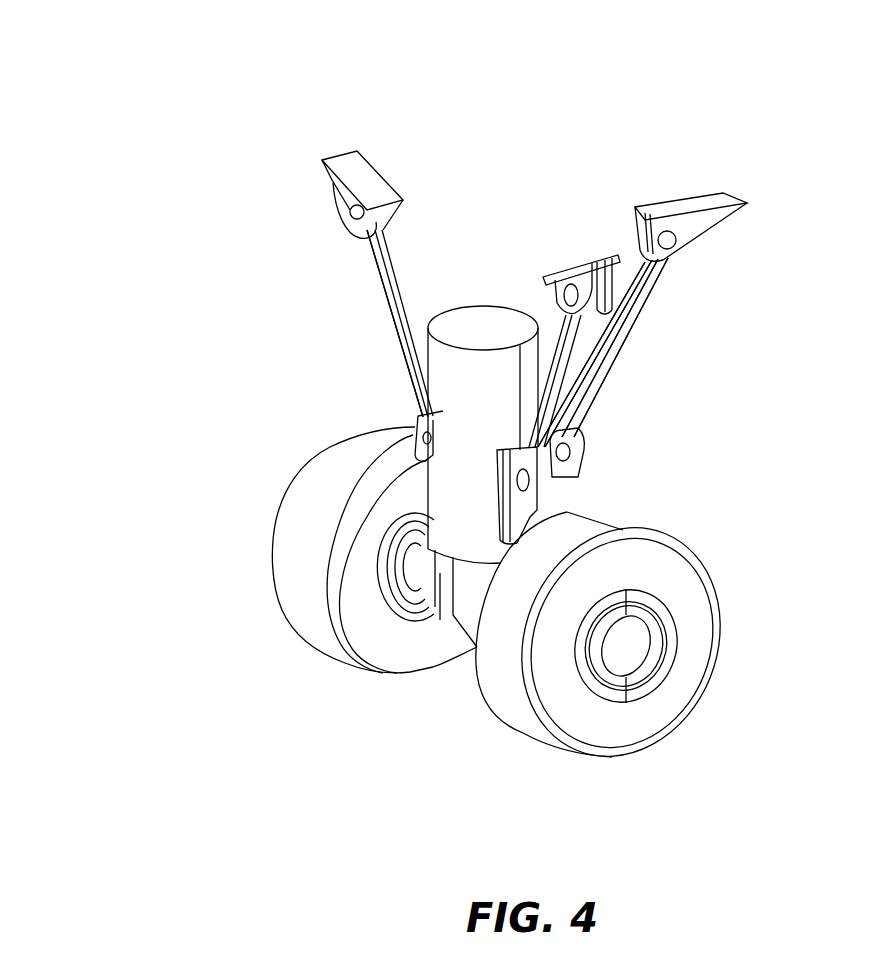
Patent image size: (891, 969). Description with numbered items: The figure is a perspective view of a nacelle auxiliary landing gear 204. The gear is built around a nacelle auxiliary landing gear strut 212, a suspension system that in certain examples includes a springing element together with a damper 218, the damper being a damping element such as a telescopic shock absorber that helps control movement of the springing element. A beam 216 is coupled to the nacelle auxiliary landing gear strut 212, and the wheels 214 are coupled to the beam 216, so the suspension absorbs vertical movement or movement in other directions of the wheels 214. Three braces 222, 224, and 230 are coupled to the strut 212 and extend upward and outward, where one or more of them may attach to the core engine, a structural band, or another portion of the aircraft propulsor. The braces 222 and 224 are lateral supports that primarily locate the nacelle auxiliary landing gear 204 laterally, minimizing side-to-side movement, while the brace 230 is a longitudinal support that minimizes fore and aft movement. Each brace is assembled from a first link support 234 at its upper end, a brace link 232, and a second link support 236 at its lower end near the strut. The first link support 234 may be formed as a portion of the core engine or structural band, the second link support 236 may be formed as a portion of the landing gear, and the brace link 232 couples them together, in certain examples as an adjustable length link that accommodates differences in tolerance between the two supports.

The nacelle auxiliary landing gear 204 is at (146, 84).
The nacelle auxiliary landing gear strut 212 is at (487, 327).
The wheels 214 is at (292, 567).
The beam 216 is at (463, 598).
The damper 218 is at (417, 417).
The brace 222 is at (630, 338).
The brace 224 is at (387, 322).
The brace 230 is at (647, 298).
The brace link 232 is at (370, 273).
The first link support 234 is at (365, 182).
The second link support 236 is at (413, 422).